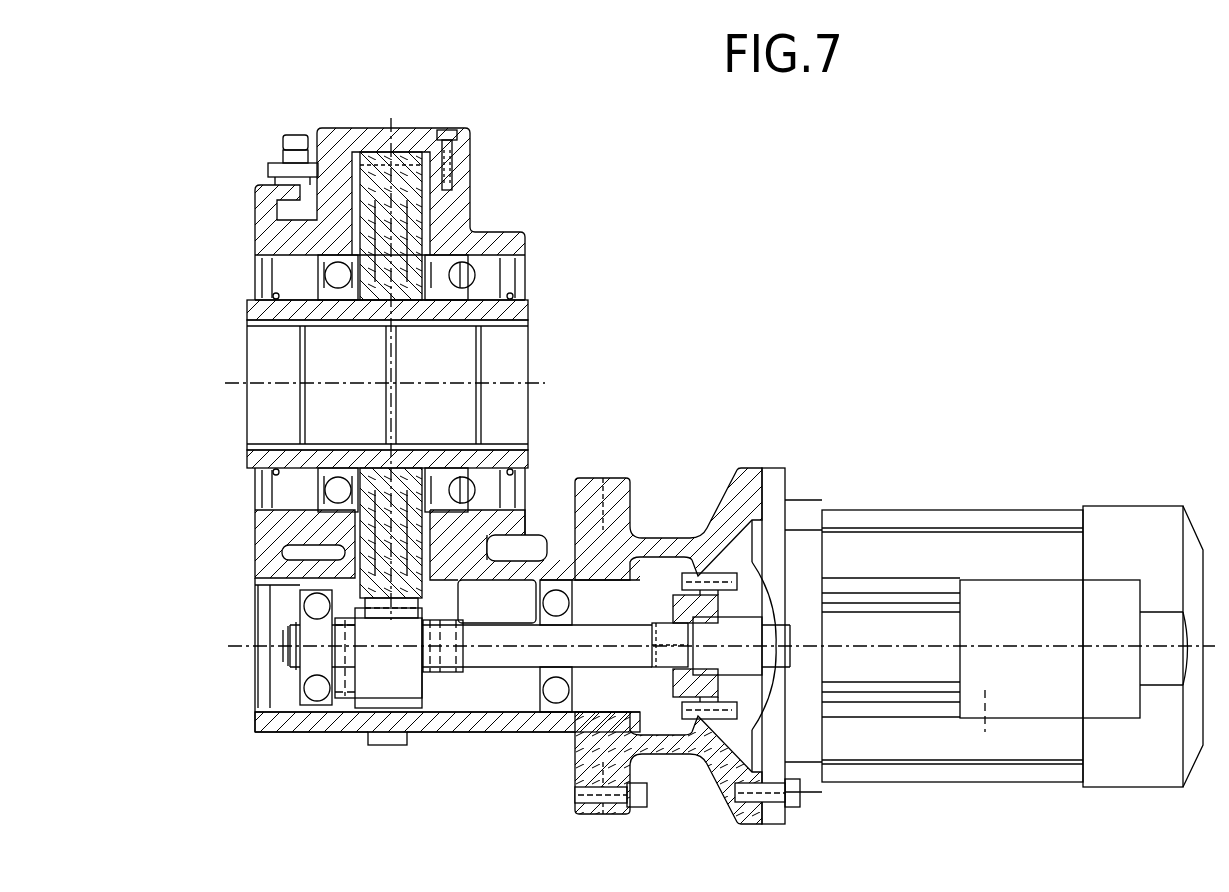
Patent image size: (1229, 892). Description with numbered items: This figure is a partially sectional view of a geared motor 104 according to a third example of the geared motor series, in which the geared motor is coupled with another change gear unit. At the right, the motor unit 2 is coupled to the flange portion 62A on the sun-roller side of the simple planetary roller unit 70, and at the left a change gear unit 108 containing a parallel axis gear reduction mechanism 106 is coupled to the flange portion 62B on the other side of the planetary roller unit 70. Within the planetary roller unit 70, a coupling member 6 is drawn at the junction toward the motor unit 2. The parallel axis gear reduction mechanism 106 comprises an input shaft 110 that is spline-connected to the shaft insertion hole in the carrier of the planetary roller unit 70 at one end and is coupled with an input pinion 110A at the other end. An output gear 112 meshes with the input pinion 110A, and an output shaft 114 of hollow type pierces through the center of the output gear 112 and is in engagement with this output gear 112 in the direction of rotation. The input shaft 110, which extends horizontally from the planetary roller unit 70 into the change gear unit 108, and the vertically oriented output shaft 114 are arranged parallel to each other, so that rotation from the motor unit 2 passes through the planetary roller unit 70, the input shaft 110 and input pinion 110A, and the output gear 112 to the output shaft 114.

The motor unit 2 is at (978, 510).
The coupling hub 6 is at (746, 656).
The flange portion 62A is at (748, 468).
The flange portion 62B is at (615, 478).
The simple planetary roller unit 70 is at (676, 424).
The geared motor 104 is at (962, 232).
The parallel axis gear reduction mechanism 106 is at (343, 556).
The change gear unit 108 is at (625, 160).
The input shaft 110 is at (478, 660).
The input pinion 110A is at (366, 690).
The output gear 112 is at (396, 222).
The output shaft 114 is at (522, 308).